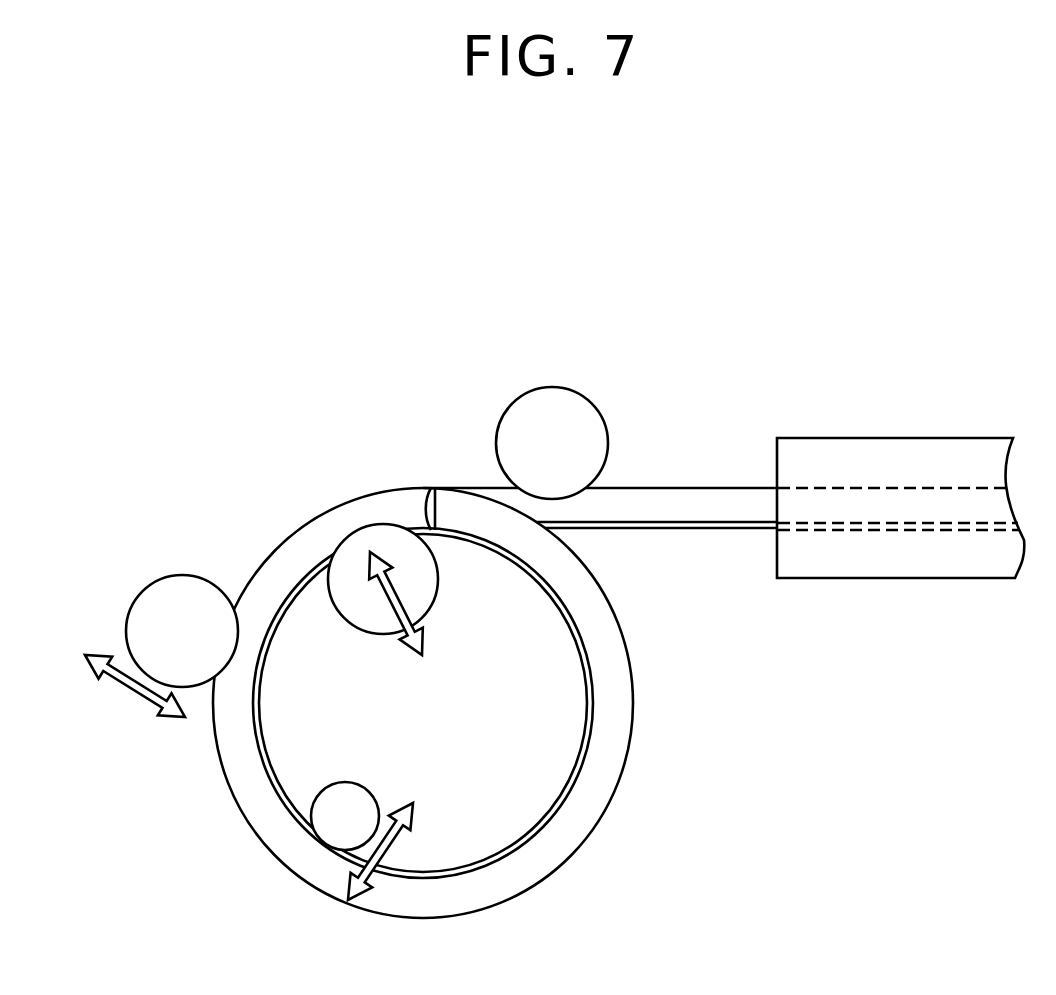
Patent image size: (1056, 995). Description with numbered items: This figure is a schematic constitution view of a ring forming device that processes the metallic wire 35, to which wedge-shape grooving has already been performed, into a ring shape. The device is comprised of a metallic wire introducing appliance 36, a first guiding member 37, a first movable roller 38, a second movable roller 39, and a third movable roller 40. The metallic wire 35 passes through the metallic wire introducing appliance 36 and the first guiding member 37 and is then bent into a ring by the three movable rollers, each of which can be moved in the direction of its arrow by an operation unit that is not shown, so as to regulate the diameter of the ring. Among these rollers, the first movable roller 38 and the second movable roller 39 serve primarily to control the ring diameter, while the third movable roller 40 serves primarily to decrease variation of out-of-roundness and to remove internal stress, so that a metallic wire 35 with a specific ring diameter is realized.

The metallic wire 35 is at (686, 488).
The metallic wire introducing appliance 36 is at (878, 438).
The first guiding member 37 is at (552, 386).
The first movable roller 38 is at (438, 602).
The second movable roller 39 is at (186, 575).
The third movable roller 40 is at (365, 790).